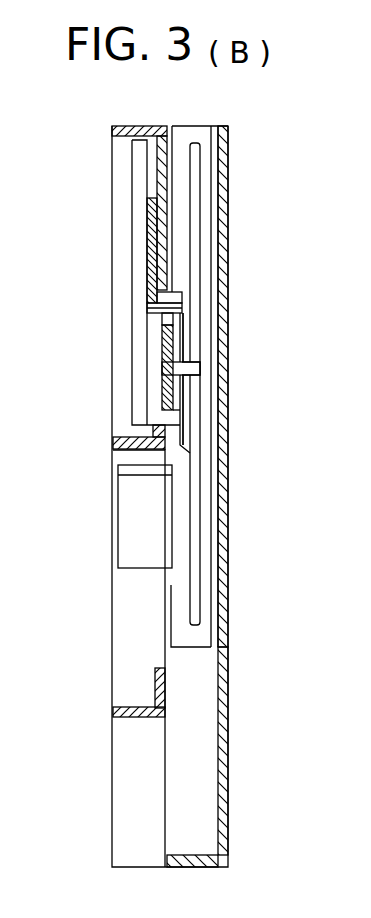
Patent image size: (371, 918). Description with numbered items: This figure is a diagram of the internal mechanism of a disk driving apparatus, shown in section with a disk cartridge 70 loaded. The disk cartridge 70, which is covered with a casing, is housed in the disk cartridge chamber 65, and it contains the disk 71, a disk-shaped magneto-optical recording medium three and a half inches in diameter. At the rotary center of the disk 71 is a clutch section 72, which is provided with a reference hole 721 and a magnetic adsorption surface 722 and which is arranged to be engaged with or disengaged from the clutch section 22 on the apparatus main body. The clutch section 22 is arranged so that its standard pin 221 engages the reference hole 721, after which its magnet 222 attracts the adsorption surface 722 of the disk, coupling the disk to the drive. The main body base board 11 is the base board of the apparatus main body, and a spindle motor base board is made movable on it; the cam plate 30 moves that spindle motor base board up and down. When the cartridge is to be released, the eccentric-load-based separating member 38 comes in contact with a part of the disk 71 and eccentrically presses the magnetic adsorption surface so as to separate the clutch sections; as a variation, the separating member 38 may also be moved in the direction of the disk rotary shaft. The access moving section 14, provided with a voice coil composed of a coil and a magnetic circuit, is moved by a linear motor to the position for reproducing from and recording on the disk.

The main body base board 11 is at (157, 181).
The access moving section 14 is at (142, 515).
The clutch section 22 is at (102, 361).
The standard pin 221 is at (162, 366).
The magnet 222 is at (167, 393).
The cam plate 30 is at (147, 255).
The eccentric-load-based separating member 38 is at (178, 292).
The disk cartridge chamber 65 is at (230, 741).
The disk cartridge 70 is at (230, 177).
The disk 71 is at (200, 587).
The clutch section 72 is at (267, 380).
The reference hole 721 is at (200, 376).
The magnetic adsorption surface 722 is at (187, 433).